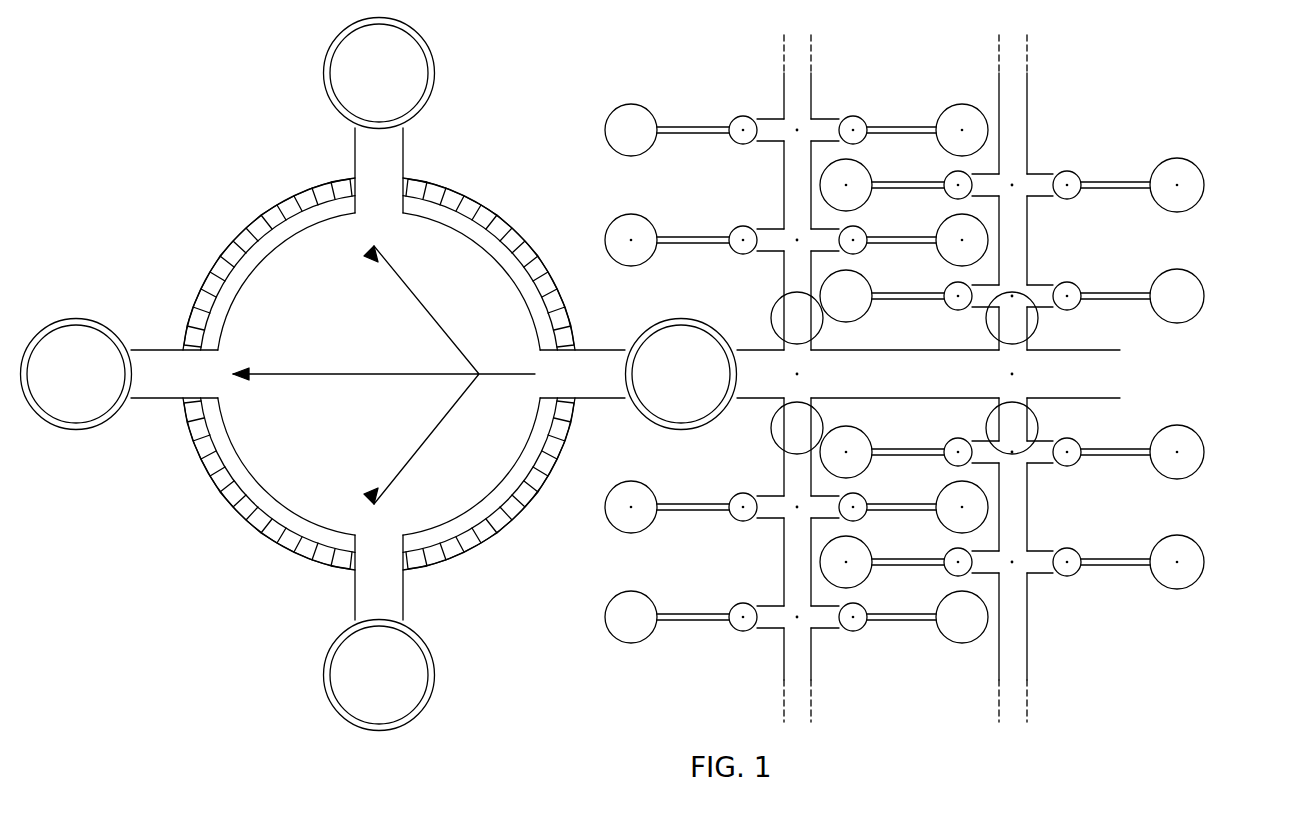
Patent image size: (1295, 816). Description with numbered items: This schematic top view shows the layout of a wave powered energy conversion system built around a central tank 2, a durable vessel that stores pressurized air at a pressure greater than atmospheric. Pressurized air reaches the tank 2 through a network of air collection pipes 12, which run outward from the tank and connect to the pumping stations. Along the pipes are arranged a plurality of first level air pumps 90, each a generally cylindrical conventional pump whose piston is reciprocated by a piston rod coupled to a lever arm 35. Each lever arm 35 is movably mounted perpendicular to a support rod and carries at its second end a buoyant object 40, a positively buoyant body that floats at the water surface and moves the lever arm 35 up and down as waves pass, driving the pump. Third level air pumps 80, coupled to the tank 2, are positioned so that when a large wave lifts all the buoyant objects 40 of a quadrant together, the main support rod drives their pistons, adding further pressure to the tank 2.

The tank 2 is at (490, 208).
The air collection pipes 12 is at (800, 80).
The lever arms 35 is at (697, 133).
The buoyant object 40 is at (1195, 183).
The third level air pumps 80 is at (353, 68).
The first level air pump 90 is at (1070, 170).